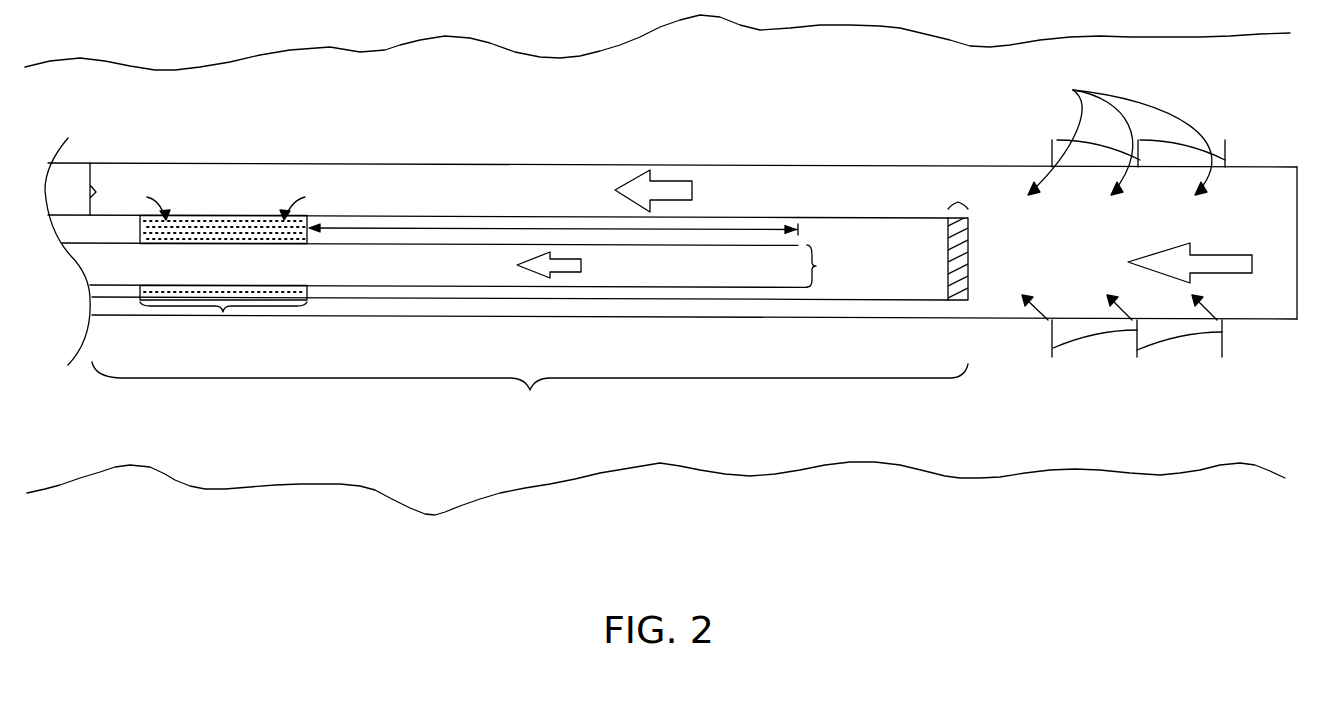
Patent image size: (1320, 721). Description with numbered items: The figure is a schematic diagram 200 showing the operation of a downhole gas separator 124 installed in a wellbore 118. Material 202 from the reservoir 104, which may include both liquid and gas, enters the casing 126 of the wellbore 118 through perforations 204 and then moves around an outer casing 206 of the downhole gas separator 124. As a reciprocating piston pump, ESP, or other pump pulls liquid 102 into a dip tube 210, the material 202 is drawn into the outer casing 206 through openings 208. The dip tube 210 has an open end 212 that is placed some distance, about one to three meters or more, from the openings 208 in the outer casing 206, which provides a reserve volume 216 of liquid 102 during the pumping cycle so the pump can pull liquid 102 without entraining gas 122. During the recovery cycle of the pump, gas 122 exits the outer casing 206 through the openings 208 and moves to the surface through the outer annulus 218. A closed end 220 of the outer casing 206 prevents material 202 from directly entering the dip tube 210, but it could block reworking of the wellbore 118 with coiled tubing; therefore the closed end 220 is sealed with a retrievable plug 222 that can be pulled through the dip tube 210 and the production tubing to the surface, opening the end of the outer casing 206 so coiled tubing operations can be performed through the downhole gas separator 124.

The liquid 102 is at (555, 275).
The reservoir 104 is at (830, 78).
The wellbore 118 is at (1247, 360).
The gas 122 is at (163, 198).
The downhole gas separator 124 is at (438, 230).
The casing 126 is at (425, 163).
The schematic diagram 200 is at (677, 594).
The material 202 is at (663, 180).
The perforations 204 is at (1052, 165).
The outer casing 206 is at (847, 217).
The openings 208 is at (223, 312).
The dip tube 210 is at (717, 288).
The open end 212 is at (816, 266).
The reserve volume 216 is at (923, 263).
The outer annulus 218 is at (105, 192).
The closed end 220 is at (958, 200).
The retrievable plug 222 is at (967, 270).